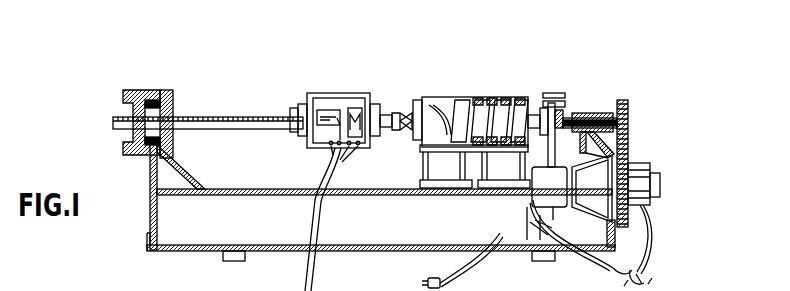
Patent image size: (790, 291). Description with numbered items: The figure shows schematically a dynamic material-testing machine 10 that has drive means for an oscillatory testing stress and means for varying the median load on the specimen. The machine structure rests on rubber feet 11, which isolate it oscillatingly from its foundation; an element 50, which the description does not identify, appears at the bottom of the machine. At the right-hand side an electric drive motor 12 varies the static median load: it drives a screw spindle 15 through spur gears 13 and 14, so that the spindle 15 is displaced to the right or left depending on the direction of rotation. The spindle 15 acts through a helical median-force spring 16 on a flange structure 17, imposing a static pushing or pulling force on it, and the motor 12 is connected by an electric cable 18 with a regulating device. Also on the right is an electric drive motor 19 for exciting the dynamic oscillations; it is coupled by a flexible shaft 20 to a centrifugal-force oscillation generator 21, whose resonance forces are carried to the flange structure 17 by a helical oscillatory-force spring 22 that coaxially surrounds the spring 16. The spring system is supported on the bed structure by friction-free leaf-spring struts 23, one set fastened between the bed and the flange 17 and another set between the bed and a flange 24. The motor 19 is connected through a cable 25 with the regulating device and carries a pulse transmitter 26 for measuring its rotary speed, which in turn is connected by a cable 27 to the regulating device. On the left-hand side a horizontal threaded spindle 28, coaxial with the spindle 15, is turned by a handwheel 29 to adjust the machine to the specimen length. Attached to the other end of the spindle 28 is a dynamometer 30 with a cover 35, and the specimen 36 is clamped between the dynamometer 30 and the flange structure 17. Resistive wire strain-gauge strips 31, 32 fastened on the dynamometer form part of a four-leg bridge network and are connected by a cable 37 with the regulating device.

The material-testing machine 10 is at (165, 240).
The rubber feet 11 is at (238, 258).
The electric drive motor 12 is at (642, 172).
The spur gear 13 is at (628, 150).
The spur gear 14 is at (628, 107).
The screw spindle 15 is at (592, 113).
The median-force spring 16 is at (490, 98).
The flange structure 17 is at (422, 100).
The power cord 18 is at (648, 244).
The electric drive motor 19 is at (530, 195).
The flexible shaft 20 is at (575, 165).
The centrifugal-force oscillation generator 21 is at (552, 100).
The oscillatory-force spring 22 is at (446, 103).
The spring struts 23 is at (460, 170).
The flange 24 is at (533, 98).
The cable 25 is at (618, 268).
The pulse transmitter 26 is at (527, 228).
The cable 27 is at (470, 252).
The spindle 28 is at (220, 115).
The handwheel 29 is at (134, 90).
The dynamometer 30 is at (326, 112).
The resistive wire strain-gauge strip 31 is at (338, 118).
The resistive wire strain-gauge strip 32 is at (355, 108).
The cover 35 is at (307, 96).
The specimen 36 is at (398, 110).
The cable 37 is at (322, 206).
The base 50 is at (197, 286).